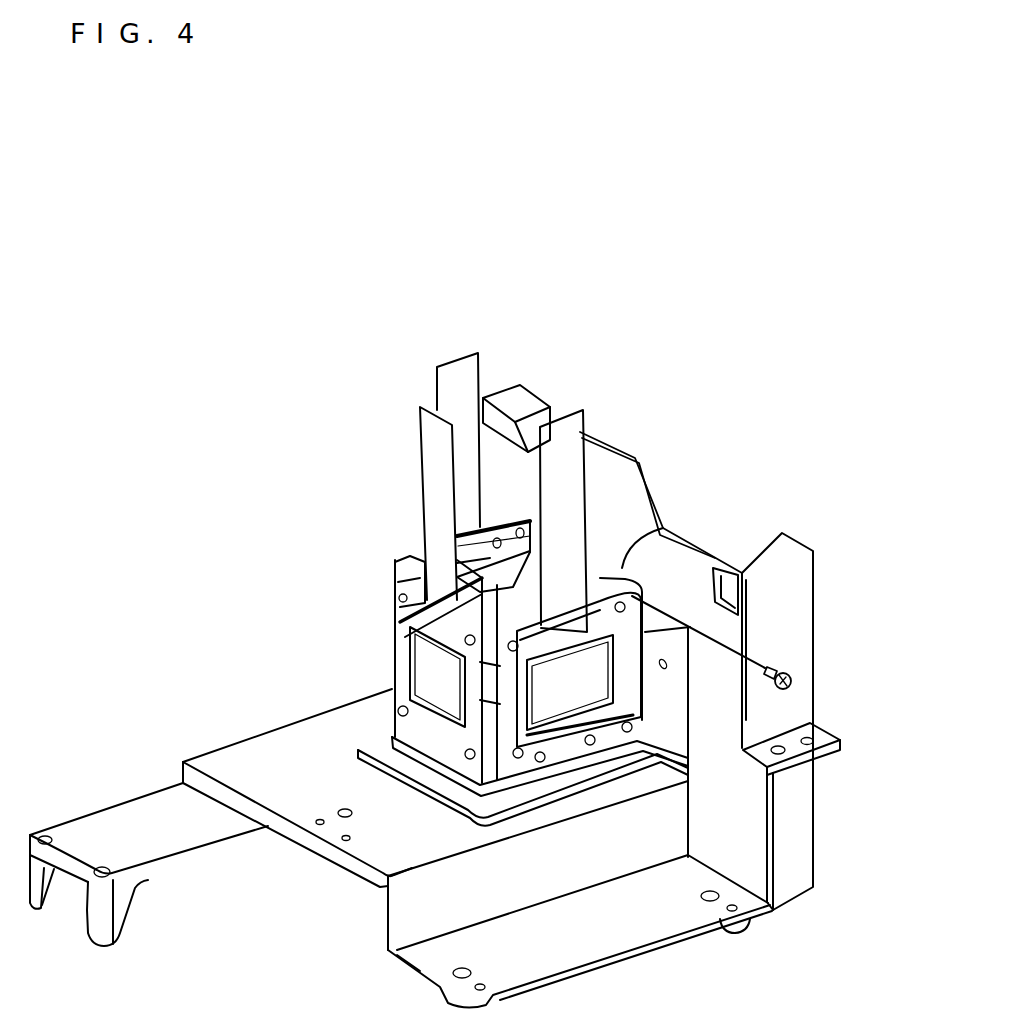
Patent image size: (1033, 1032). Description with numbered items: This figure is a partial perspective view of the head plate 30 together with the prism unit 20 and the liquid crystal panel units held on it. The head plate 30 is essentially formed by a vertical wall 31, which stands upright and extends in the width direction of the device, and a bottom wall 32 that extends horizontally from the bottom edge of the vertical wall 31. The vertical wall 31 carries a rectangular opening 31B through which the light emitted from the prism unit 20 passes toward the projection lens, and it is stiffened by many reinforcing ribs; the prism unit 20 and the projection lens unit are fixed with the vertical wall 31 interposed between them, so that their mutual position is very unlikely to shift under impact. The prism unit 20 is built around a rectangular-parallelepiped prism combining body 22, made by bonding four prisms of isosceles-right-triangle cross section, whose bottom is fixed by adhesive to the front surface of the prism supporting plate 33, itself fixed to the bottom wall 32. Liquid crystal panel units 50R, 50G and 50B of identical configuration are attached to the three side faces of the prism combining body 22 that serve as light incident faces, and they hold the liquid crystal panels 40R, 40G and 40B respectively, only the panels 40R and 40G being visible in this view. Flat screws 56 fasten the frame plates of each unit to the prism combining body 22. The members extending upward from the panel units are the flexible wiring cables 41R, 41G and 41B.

The prism unit 20 is at (393, 496).
The prism combining body 22 is at (488, 572).
The head plate 30 is at (658, 456).
The vertical wall 31 is at (680, 560).
The rectangular opening 31B is at (667, 528).
The bottom wall 32 is at (345, 855).
The prism supporting plate 33 is at (440, 789).
The liquid crystal panel 40B is at (403, 565).
The liquid crystal panel 40G is at (460, 691).
The liquid crystal panel 40R is at (583, 702).
The flexible wiring cable 41B is at (460, 385).
The flexible wiring cable 41G is at (423, 423).
The flexible wiring cable 41R is at (560, 467).
The liquid crystal panel unit 50B is at (389, 561).
The liquid crystal panel unit 50G is at (369, 658).
The liquid crystal panel unit 50R is at (497, 818).
The flat screw 56 is at (784, 672).